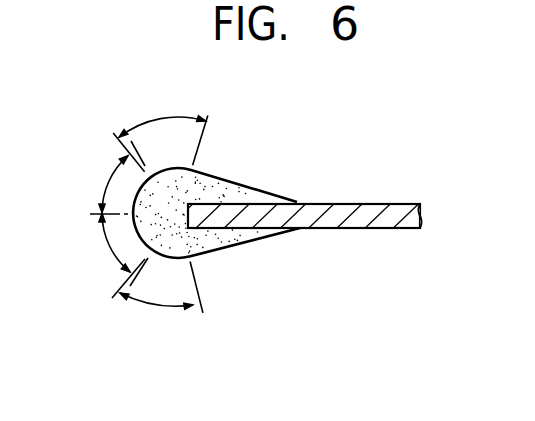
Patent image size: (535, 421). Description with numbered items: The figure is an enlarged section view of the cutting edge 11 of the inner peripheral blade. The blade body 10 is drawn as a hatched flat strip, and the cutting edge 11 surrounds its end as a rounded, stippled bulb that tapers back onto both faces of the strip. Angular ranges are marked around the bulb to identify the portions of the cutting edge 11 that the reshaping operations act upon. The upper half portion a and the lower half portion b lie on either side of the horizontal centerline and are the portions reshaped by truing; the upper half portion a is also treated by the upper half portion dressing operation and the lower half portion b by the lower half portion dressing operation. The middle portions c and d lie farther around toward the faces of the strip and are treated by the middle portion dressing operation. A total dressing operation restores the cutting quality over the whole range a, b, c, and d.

The fiber 10 is at (388, 215).
The cutting edge 11 is at (213, 192).
The upper half portion a is at (117, 173).
The lower half portion b is at (120, 255).
The middle portion c is at (163, 124).
The middle portion d is at (161, 301).